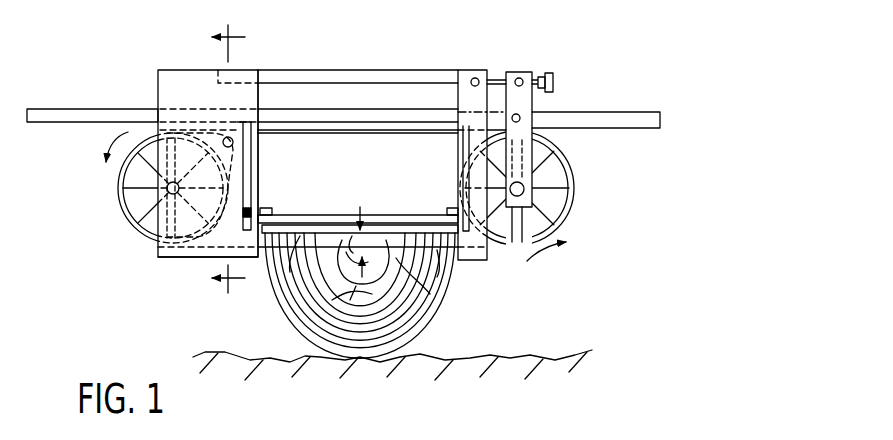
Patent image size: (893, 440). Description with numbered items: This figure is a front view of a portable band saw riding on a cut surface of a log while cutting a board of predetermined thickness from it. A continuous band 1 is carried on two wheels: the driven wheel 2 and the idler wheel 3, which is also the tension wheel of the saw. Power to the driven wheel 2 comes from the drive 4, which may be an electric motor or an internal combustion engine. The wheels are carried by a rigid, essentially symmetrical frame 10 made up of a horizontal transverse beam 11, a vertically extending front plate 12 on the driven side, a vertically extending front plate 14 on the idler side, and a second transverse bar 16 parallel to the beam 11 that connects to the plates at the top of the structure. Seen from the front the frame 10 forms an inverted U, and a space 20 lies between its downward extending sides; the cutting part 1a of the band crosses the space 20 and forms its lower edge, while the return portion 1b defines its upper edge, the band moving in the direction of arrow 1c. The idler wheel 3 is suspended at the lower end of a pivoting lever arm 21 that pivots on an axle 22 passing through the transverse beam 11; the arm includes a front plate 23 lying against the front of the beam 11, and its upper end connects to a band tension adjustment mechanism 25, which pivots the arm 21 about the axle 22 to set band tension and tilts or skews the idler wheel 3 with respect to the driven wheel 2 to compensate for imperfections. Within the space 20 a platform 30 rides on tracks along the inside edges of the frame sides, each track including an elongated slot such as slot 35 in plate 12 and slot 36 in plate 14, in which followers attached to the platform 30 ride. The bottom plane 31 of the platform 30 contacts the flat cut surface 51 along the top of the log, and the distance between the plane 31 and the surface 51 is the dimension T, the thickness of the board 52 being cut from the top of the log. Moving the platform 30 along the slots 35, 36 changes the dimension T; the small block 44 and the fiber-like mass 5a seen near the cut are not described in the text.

The frame 10 is at (182, 64).
The front plate on driven side 12 is at (158, 256).
The drive 4 is at (220, 153).
The second transverse bar 16 is at (338, 70).
The transverse beam 11 is at (112, 108).
The space 20 is at (397, 170).
The return portion of band 1b is at (347, 133).
The front plate on idler side 14 is at (484, 262).
The slot in plate 14 36 is at (458, 148).
The slot in plate 12 35 is at (262, 152).
The band tension adjustment mechanism 25 is at (500, 72).
The pivoting lever arm 21 is at (558, 103).
The axle 22 is at (523, 118).
The front plate of arm 23 is at (535, 102).
The driven wheel 2 is at (117, 187).
The idler wheel 3 is at (575, 204).
The arrow 1c is at (128, 132).
The stop block 44 is at (285, 232).
The platform 30 is at (327, 217).
The dimension T is at (360, 207).
The continuous band 1 is at (207, 248).
The fiber mass 5a is at (436, 320).
The bottom plane of platform 31 is at (303, 270).
The board 52 is at (312, 237).
The flat cut surface 51 is at (376, 249).
The cutting part of band 1a is at (437, 277).